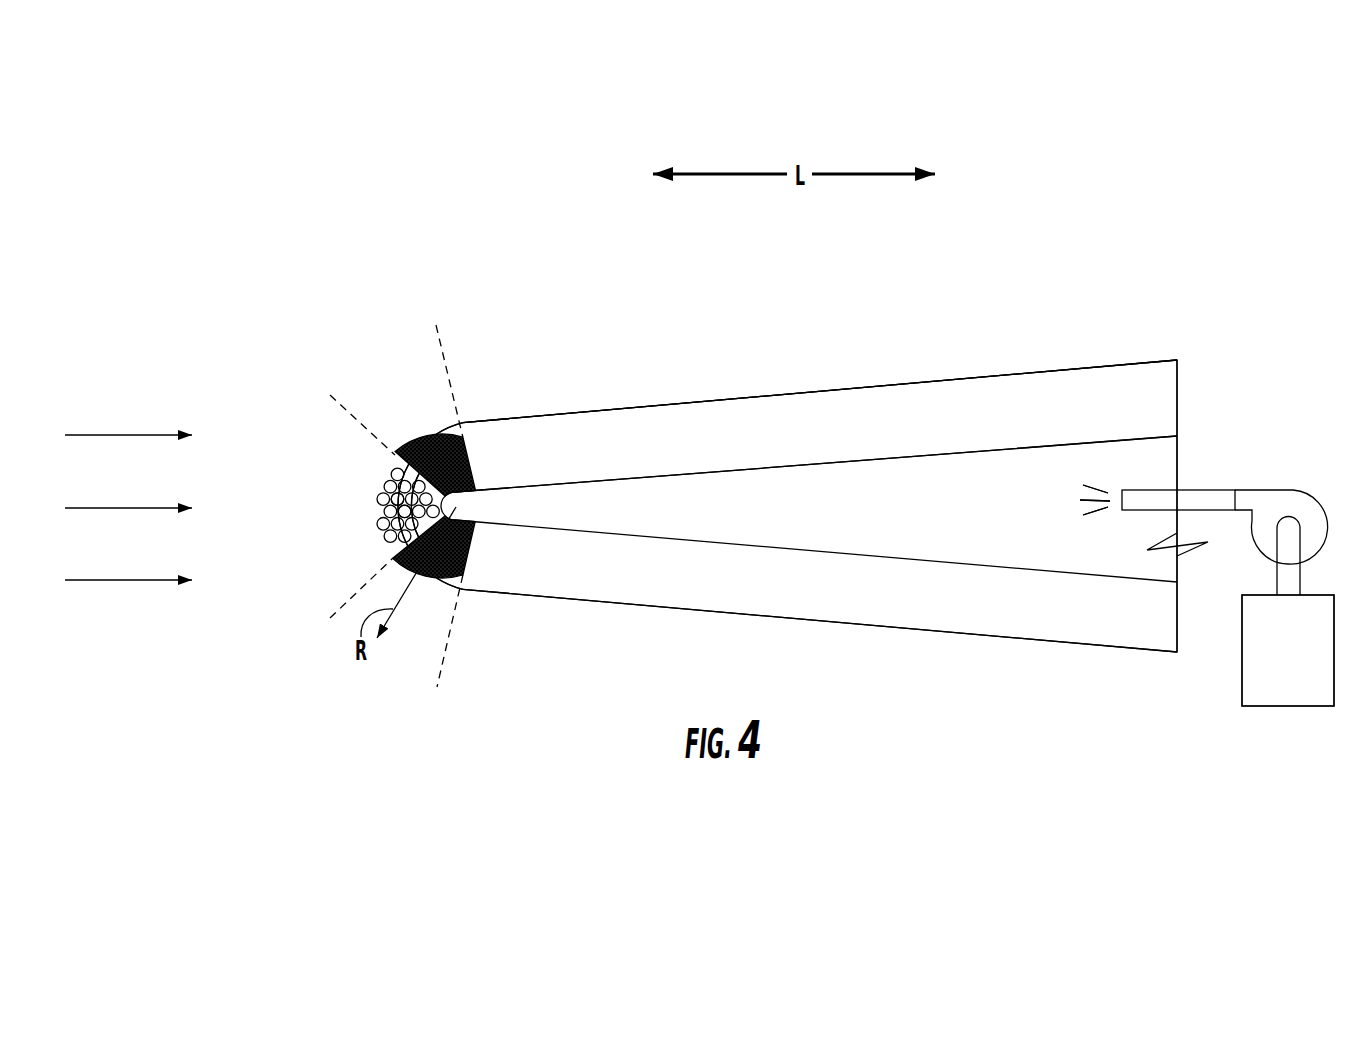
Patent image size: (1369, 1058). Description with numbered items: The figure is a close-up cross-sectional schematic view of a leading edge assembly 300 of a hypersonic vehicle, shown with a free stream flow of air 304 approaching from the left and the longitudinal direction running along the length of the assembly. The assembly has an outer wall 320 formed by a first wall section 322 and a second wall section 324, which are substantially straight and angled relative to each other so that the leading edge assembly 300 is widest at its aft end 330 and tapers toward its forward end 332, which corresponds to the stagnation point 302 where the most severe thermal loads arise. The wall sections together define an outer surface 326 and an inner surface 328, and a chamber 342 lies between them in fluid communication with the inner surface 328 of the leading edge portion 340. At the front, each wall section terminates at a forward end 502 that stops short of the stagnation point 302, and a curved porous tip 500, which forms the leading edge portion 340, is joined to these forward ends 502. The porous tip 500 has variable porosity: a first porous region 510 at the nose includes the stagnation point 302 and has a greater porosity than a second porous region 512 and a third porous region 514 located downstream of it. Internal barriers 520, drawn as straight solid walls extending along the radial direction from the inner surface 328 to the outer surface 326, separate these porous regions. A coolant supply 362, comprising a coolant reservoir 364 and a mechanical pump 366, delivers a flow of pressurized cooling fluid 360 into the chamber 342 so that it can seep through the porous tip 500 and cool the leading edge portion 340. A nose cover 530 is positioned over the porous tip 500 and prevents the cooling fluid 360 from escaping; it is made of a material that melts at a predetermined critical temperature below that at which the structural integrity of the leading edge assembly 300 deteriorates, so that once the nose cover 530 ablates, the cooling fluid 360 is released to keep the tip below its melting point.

The leading edge assembly 300 is at (787, 335).
The stagnation point 302 is at (350, 510).
The flow of air 304 is at (117, 435).
The outer wall 320 is at (1005, 402).
The first wall section 322 is at (890, 407).
The second wall section 324 is at (777, 598).
The outer surface 326 is at (703, 397).
The inner surface 328 is at (778, 547).
The aft end 330 is at (1178, 343).
The forward end 332 is at (425, 610).
The leading edge portion 340 is at (348, 348).
The chamber 342 is at (1042, 521).
The cooling fluid 360 is at (1095, 490).
The coolant supply 362 is at (1258, 723).
The coolant reservoir 364 is at (1307, 663).
The mechanical pump 366 is at (1288, 487).
The porous tip 500 is at (313, 557).
The forward end 502 is at (477, 462).
The first porous region 510 is at (342, 463).
The second porous region 512 is at (405, 363).
The third porous region 514 is at (400, 630).
The internal barriers 520 is at (368, 524).
The nose cover 530 is at (372, 540).